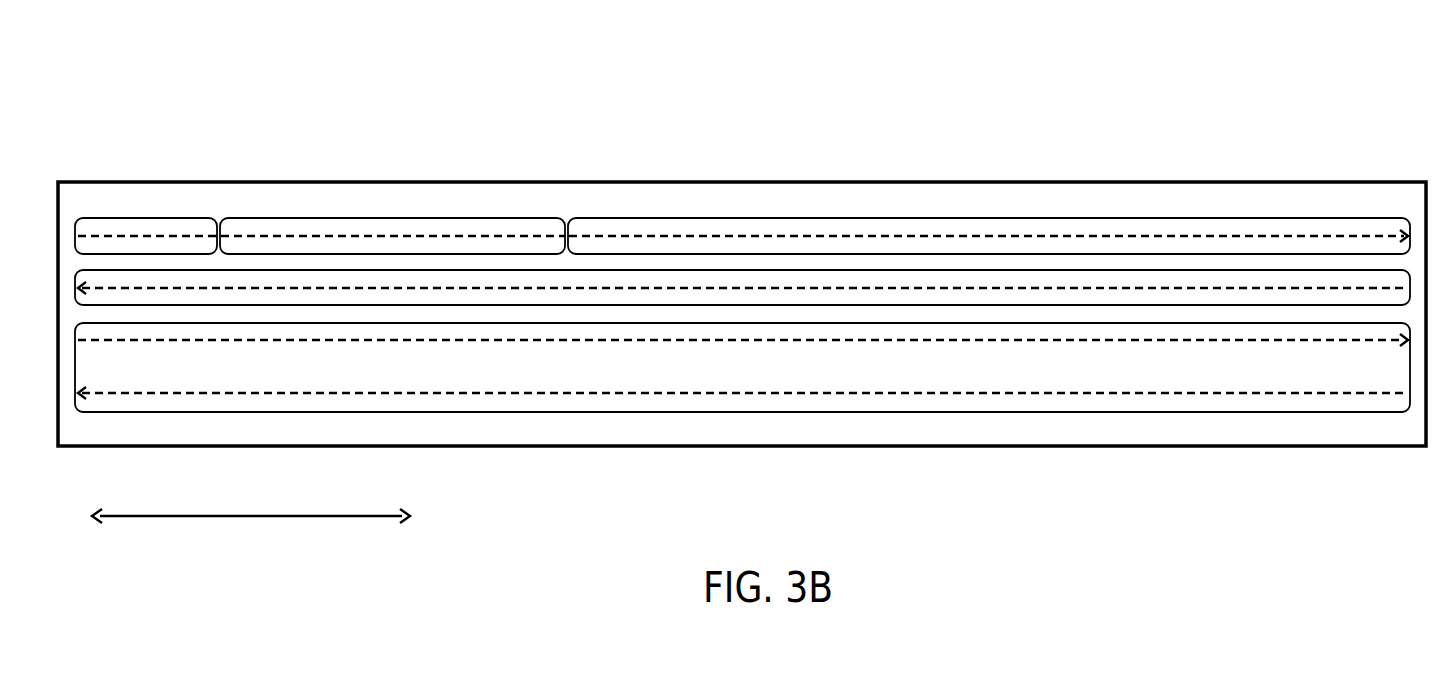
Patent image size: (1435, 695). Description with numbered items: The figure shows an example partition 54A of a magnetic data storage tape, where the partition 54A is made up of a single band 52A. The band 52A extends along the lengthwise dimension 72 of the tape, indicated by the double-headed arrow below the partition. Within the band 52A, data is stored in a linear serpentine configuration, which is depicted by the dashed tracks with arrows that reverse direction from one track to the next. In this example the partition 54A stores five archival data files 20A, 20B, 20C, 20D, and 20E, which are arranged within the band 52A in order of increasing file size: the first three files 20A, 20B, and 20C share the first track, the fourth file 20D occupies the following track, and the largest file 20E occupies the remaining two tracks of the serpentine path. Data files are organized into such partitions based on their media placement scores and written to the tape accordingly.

The band 52A is at (742, 182).
The archival data file 20A is at (147, 218).
The archival data file 20B is at (392, 218).
The archival data file 20C is at (989, 218).
The archival data file 20D is at (1145, 270).
The archival data file 20E is at (742, 412).
The partition 54A is at (1356, 118).
The lengthwise dimension 72 is at (252, 517).